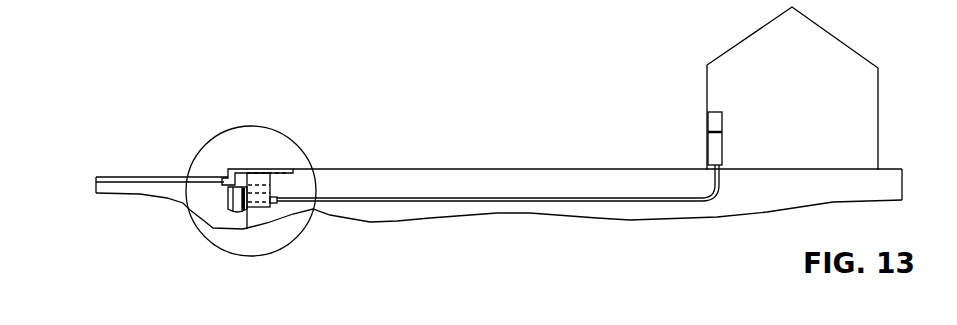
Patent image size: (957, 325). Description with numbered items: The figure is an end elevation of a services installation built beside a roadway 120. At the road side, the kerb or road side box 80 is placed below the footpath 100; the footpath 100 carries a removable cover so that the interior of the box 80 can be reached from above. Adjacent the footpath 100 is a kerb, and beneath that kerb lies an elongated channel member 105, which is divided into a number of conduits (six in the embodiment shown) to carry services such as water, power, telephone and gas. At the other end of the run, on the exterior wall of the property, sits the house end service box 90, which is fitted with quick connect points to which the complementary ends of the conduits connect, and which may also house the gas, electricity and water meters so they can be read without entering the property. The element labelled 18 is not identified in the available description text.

The board / panel 18 is at (423, 200).
The kerb or road side box 80 is at (280, 188).
The house end service box 90 is at (710, 147).
The footpath 100 is at (285, 172).
The elongated channel member 105 is at (230, 205).
The roadway 120 is at (157, 178).